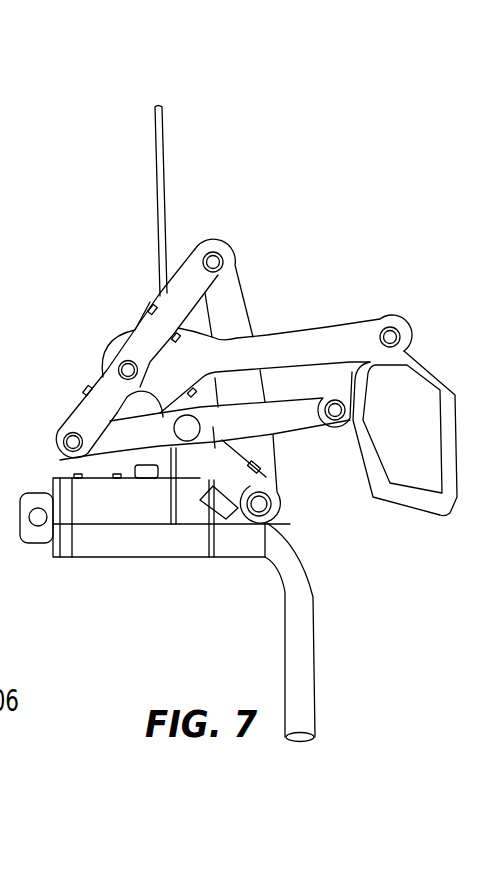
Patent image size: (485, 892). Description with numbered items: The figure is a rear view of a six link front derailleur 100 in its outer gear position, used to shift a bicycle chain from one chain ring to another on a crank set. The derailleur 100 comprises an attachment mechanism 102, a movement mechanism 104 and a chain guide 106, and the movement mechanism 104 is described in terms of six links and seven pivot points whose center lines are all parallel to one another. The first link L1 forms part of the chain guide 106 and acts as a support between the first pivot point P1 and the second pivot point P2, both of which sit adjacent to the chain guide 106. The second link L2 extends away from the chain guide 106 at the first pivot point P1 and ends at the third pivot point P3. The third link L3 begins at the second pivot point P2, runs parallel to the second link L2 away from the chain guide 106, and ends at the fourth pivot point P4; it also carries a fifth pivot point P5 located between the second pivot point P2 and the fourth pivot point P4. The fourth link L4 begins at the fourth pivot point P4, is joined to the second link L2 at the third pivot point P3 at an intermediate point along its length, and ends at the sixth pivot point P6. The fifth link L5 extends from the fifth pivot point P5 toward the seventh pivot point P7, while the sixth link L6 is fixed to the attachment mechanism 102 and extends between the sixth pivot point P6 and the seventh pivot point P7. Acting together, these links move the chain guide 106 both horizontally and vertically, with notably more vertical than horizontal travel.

The six link front derailleur 100 is at (80, 265).
The attachment mechanism 102 is at (79, 598).
The movement mechanism 104 is at (350, 222).
The chain guide 106 is at (403, 496).
The first link L1 is at (356, 381).
The second link L2 is at (283, 348).
The third link L3 is at (215, 425).
The fourth link L4 is at (148, 335).
The fifth link L5 is at (224, 468).
The sixth link L6 is at (233, 312).
The first pivot point P1 is at (390, 336).
The second pivot point P2 is at (334, 413).
The third pivot point P3 is at (121, 370).
The fourth pivot point P4 is at (66, 442).
The fifth pivot point P5 is at (187, 430).
The sixth pivot point P6 is at (214, 260).
The seventh pivot point P7 is at (259, 504).